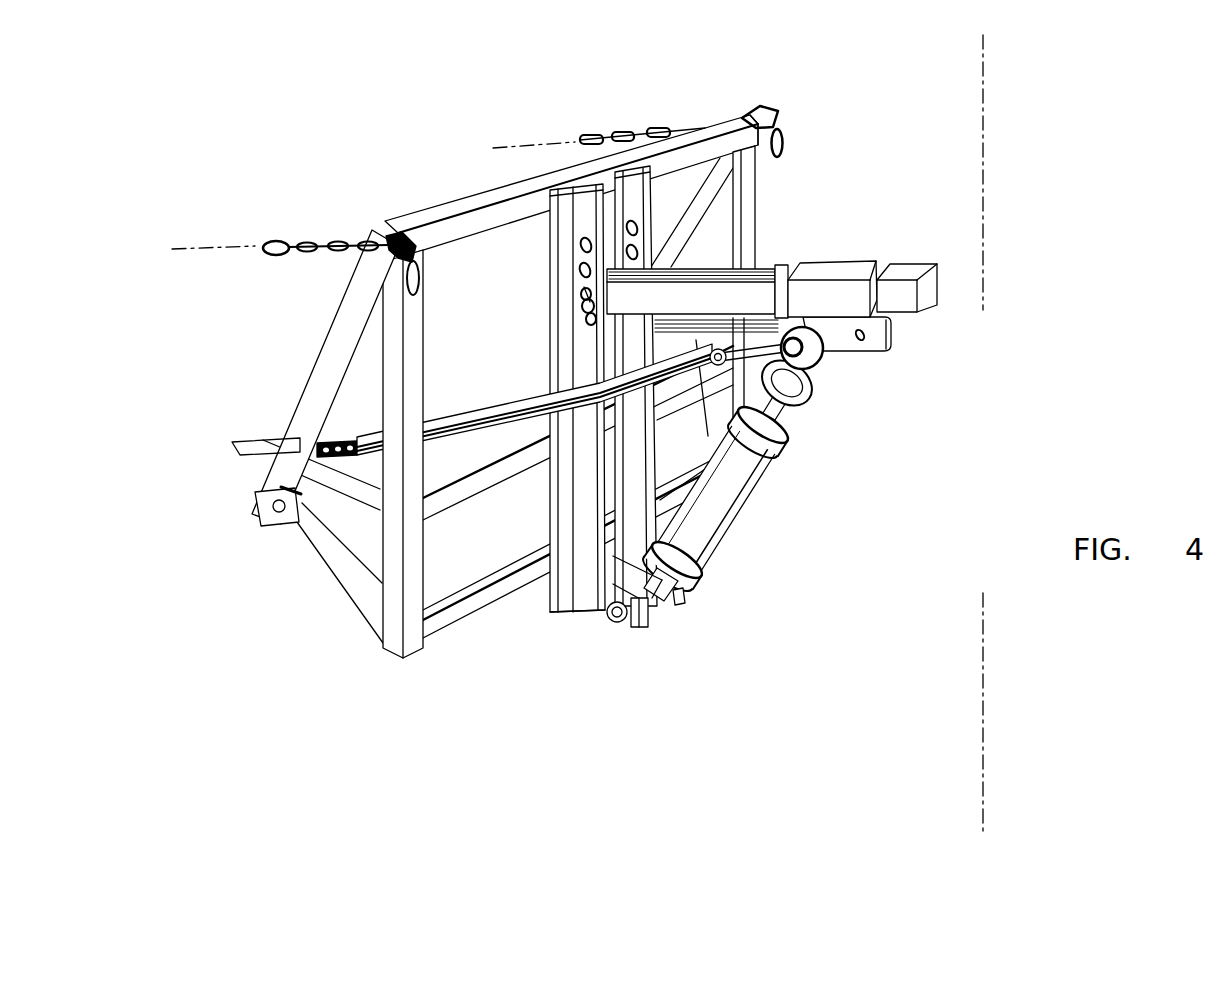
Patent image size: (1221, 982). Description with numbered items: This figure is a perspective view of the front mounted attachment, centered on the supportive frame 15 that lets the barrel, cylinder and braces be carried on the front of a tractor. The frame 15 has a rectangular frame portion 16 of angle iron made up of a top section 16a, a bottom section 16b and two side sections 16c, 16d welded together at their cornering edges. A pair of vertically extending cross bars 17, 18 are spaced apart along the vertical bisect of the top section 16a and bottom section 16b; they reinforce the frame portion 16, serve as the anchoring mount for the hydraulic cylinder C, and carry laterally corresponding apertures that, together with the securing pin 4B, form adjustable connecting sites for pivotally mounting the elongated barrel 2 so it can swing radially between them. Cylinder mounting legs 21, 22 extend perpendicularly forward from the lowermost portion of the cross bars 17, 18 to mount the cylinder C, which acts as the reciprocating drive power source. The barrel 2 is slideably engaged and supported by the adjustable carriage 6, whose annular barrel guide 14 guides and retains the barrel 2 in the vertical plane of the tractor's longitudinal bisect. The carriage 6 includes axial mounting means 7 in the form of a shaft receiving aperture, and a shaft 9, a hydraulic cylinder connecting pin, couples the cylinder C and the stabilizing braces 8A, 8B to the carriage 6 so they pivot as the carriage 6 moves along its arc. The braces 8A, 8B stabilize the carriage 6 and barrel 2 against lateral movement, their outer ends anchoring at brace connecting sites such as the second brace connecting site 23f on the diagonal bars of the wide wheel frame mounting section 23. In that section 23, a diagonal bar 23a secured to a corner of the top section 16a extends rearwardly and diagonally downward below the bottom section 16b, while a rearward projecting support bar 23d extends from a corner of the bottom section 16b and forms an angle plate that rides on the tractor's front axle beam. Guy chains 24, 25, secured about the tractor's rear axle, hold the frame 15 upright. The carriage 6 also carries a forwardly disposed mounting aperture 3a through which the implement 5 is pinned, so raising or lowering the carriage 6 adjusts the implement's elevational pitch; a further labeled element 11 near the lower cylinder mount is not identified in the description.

The elongated barrel 2 is at (907, 268).
The mounting aperture 3a is at (853, 338).
The securing pin 4B is at (580, 298).
The implement 5 is at (1005, 55).
The adjustable carriage 6 is at (893, 328).
The axial mounting means 7 is at (816, 368).
The stabilizing brace 8A is at (703, 272).
The stabilizing brace 8B is at (507, 397).
The shaft 9 is at (783, 265).
The lower mount 11 is at (590, 630).
The barrel guide 14 is at (840, 264).
The supportive frame 15 is at (716, 106).
The rectangular-shaped frame portion 16 is at (368, 657).
The top section 16a is at (440, 210).
The bottom section 16b is at (485, 487).
The side section 16c is at (745, 200).
The side section 16d is at (417, 331).
The cross bar 17 is at (692, 143).
The cross bar 18 is at (551, 237).
The cylinder mounting leg 21 is at (687, 597).
The cylinder mounting leg 22 is at (647, 623).
The wide wheel frame mounting section 23 is at (218, 437).
The diagonal bar 23a is at (780, 118).
The rearward projecting support bar 23d is at (253, 455).
The second brace connecting site 23f is at (313, 362).
The guy chain 24 is at (603, 134).
The guy chain 25 is at (322, 232).
The reciprocating drive power source C is at (733, 508).